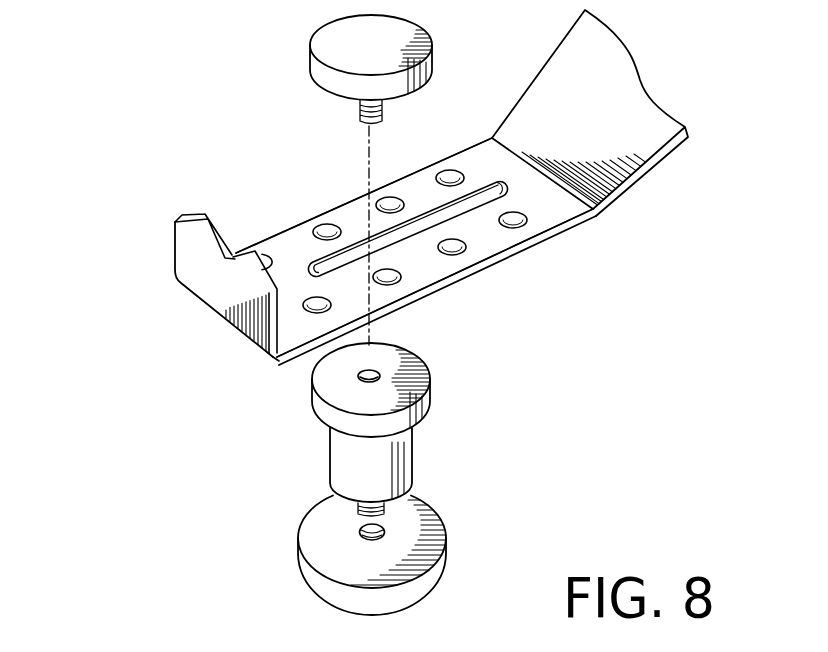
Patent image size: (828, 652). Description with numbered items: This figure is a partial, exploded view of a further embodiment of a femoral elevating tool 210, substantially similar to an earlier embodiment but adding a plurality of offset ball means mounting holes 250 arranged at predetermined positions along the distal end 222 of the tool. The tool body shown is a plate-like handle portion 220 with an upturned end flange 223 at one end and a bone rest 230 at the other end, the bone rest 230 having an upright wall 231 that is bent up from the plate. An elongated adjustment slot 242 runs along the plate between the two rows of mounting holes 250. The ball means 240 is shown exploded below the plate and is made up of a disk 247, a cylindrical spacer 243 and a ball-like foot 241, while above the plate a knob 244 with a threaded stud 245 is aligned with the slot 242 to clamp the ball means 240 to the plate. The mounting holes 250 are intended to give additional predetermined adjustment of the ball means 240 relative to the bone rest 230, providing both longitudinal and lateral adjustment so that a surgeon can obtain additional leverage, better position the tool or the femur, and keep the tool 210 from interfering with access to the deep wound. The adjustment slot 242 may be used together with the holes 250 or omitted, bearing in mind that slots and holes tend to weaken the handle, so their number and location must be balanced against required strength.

The femoral elevating tool 210 is at (392, 312).
The bracket plate 220 is at (590, 226).
The distal end 222 is at (355, 218).
The upturned flange 223 is at (650, 137).
The bone rest 230 is at (173, 235).
The upright end wall 231 is at (195, 277).
The ball means 240 is at (379, 479).
The foot pad 241 is at (457, 534).
The adjustment slot 242 is at (483, 187).
The cylindrical spacer 243 is at (343, 462).
The knob 244 is at (318, 70).
The threaded stud 245 is at (359, 112).
The disk 247 is at (309, 399).
The ball means mounting holes 250 is at (523, 230).